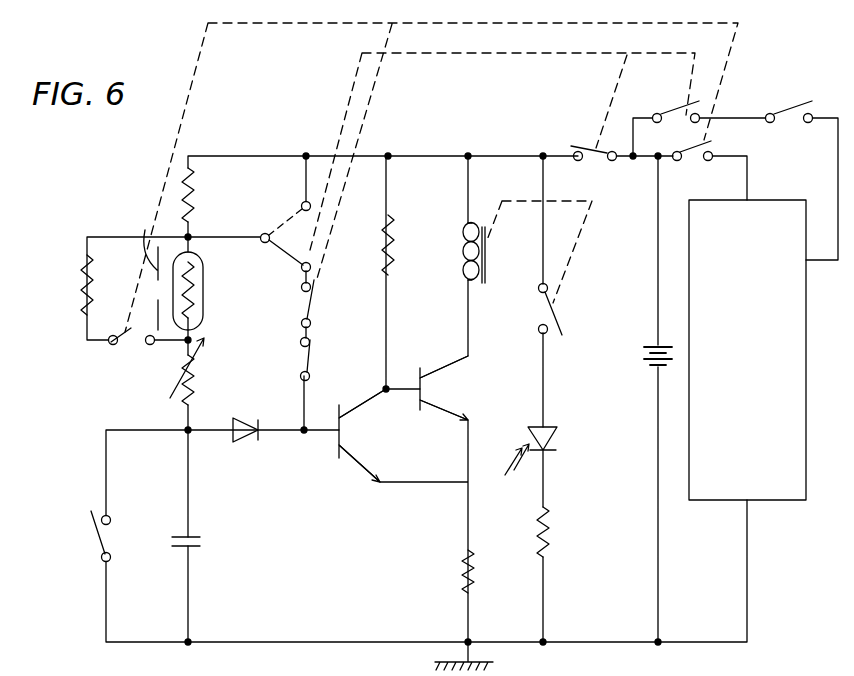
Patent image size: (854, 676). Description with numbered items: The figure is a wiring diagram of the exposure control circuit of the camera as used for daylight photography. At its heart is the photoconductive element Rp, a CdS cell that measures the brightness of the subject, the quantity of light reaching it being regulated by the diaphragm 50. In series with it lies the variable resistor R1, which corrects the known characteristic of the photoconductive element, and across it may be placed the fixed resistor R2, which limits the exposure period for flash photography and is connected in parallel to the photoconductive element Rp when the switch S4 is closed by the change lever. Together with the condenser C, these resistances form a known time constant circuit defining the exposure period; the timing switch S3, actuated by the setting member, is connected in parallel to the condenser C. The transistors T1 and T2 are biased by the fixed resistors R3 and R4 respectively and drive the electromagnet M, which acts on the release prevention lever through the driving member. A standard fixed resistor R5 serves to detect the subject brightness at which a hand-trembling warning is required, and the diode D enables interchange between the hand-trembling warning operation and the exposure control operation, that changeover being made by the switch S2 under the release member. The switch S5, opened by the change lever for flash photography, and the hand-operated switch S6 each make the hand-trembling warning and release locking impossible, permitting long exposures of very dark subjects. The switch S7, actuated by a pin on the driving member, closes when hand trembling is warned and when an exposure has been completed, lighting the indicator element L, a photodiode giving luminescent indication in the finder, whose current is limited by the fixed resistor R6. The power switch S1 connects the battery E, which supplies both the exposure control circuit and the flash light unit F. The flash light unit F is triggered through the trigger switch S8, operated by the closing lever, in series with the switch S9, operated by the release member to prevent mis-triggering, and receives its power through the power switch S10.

The diaphragm 50 is at (140, 271).
The standard fixed-resistor R5 is at (196, 198).
The fixed resistor R2 is at (84, 282).
The photoconductive element Rp is at (203, 290).
The switch S4 is at (132, 348).
The variable resistor R1 is at (195, 376).
The switch S2 is at (286, 237).
The switch S5 is at (318, 304).
The hand-operated switch S6 is at (311, 358).
The fixed resistor R3 is at (395, 247).
The electromagnet M is at (463, 270).
The switch S7 is at (540, 305).
The power switch S1 is at (594, 164).
The switch S9 is at (676, 120).
The power switch S10 is at (694, 161).
The trigger switch S8 is at (789, 120).
The battery E is at (643, 363).
The flash light unit F is at (806, 406).
The indicator element L is at (556, 440).
The fixed resistor R6 is at (549, 532).
The fixed resistor R4 is at (462, 568).
The transistor T1 is at (343, 435).
The transistor T2 is at (424, 388).
The diode D is at (240, 442).
The condenser C is at (201, 542).
The timing switch S3 is at (94, 536).